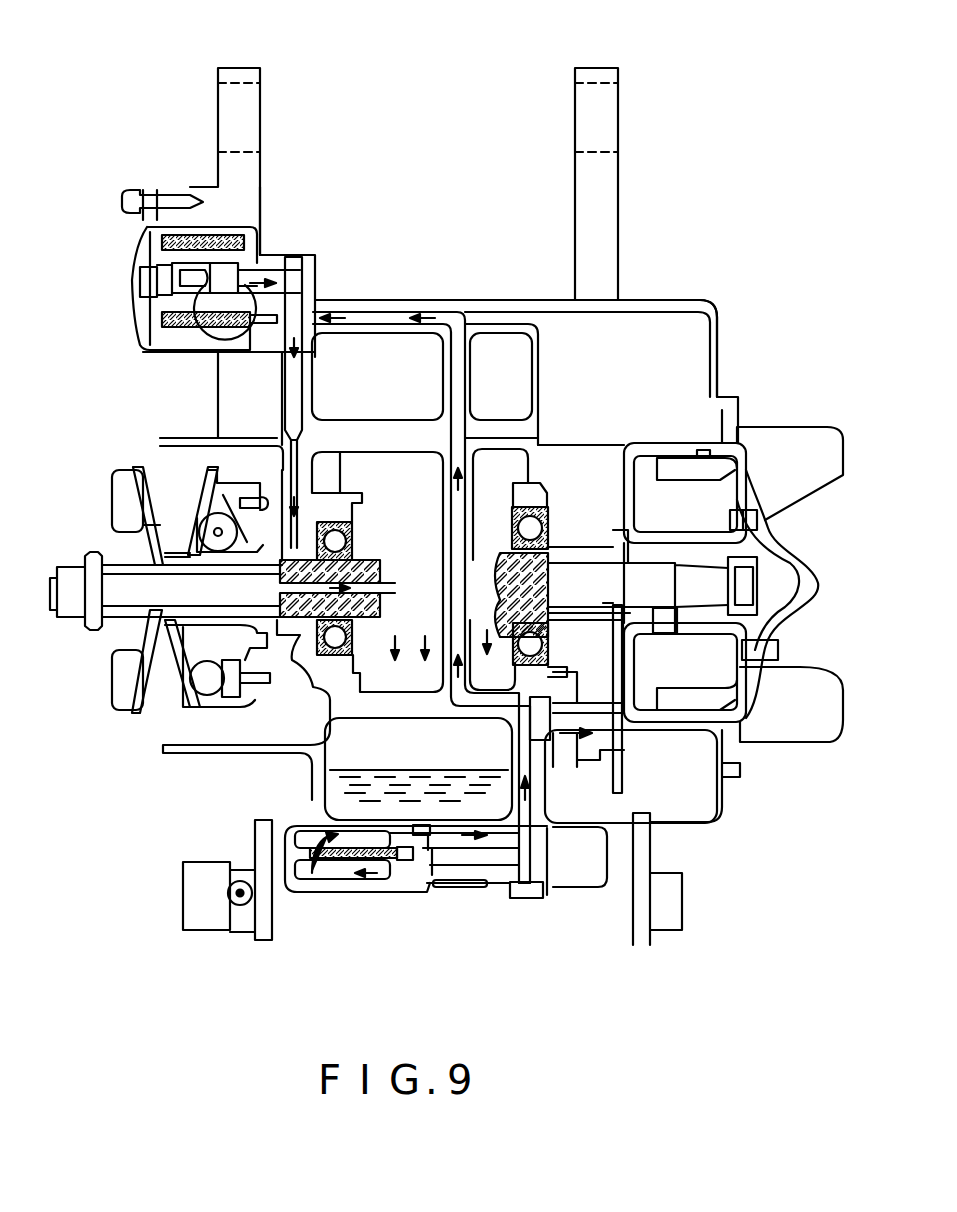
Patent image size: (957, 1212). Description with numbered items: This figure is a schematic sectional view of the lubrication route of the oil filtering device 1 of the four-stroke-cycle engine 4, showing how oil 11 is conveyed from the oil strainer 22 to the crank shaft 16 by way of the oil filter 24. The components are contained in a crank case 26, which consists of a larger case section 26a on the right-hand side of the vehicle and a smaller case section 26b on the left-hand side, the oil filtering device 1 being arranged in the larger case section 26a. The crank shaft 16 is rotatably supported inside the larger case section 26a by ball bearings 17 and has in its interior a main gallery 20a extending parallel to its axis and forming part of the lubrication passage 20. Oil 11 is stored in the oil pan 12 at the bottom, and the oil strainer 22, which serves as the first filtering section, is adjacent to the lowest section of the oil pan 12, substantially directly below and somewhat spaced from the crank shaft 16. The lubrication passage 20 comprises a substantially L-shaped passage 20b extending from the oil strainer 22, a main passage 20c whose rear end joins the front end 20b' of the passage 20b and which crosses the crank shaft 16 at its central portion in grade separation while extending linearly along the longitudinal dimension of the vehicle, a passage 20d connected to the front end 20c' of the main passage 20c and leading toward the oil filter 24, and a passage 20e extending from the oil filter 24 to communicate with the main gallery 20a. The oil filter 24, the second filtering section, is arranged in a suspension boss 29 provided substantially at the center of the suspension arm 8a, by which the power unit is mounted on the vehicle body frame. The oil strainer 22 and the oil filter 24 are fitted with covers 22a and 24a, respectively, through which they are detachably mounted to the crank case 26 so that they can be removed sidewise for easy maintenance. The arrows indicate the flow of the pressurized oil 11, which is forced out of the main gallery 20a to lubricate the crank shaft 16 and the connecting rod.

The oil filtering device 1 is at (212, 387).
The four-stroke-cycle engine 4 is at (715, 308).
The suspension arm 8a is at (218, 123).
The oil 11 is at (325, 797).
The oil pan 12 is at (432, 905).
The crank shaft 16 is at (220, 588).
The ball bearings 17 is at (357, 520).
The lubrication passage 20 is at (398, 313).
The main gallery 20a is at (380, 590).
The passage 20b is at (496, 884).
The front end of passage 20b' is at (459, 735).
The main passage 20c is at (540, 505).
The front end of main passage 20c' is at (506, 348).
The passage 20d is at (367, 310).
The passage 20e is at (302, 448).
The oil strainer 22 is at (330, 905).
The cover 22a is at (300, 905).
The oil filter 24 is at (173, 190).
The cover 24a is at (138, 253).
The crank case 26 is at (262, 183).
The larger case section 26a is at (163, 755).
The smaller case section 26b is at (721, 347).
The suspension boss 29 is at (173, 350).